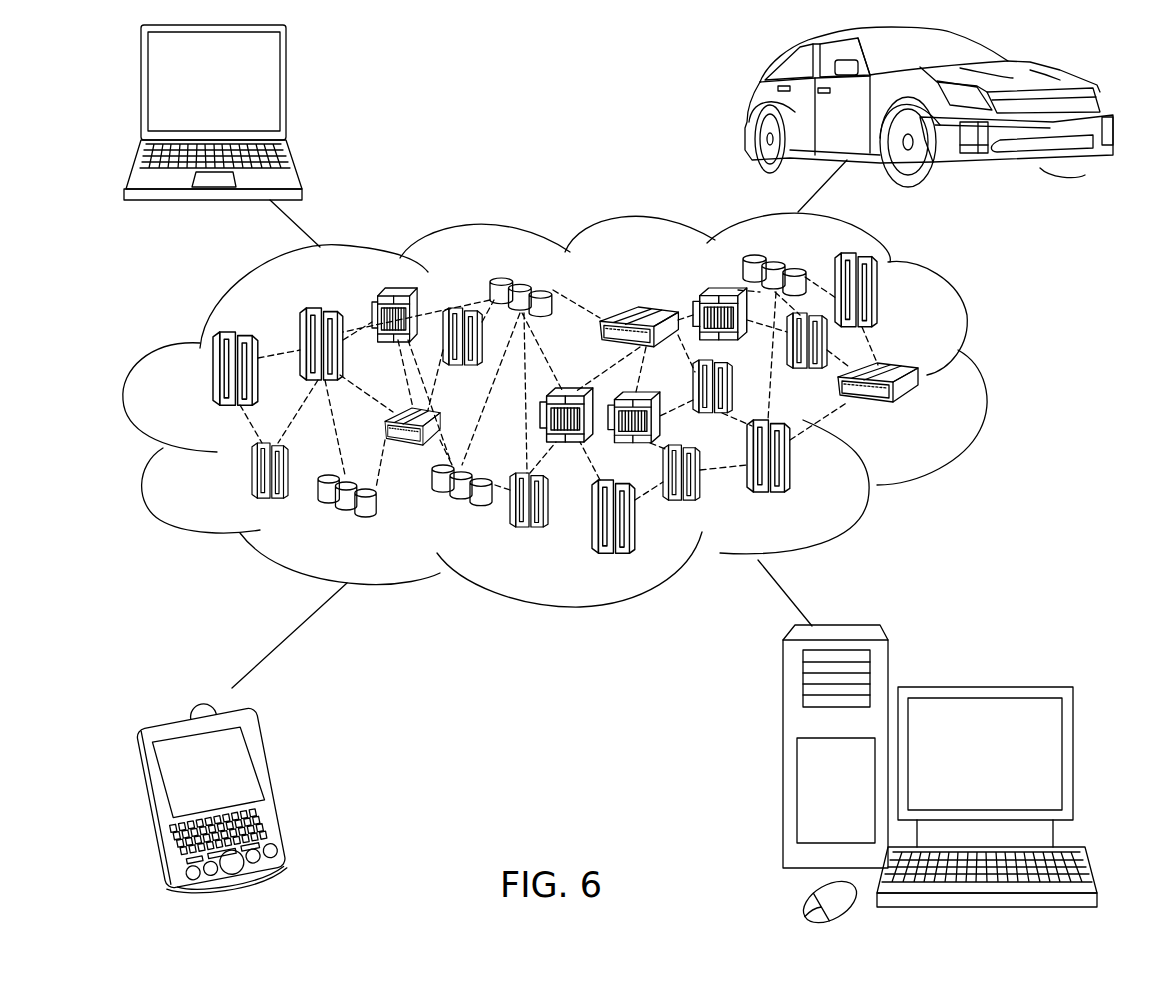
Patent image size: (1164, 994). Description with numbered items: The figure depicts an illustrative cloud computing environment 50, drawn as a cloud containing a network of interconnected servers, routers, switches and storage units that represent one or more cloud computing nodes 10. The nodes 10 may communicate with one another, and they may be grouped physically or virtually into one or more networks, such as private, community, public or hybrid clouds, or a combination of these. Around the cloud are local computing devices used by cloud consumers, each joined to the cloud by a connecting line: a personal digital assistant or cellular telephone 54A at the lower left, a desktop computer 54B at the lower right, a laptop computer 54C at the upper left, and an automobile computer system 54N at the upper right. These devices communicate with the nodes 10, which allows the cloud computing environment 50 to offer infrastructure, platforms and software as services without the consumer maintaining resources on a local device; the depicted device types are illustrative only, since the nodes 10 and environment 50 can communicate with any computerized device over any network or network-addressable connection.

The cloud computing node 10 is at (920, 411).
The cloud computing environment 50 is at (987, 380).
The personal digital assistant or cellular telephone 54A is at (275, 787).
The desktop computer 54B is at (983, 685).
The laptop computer 54C is at (286, 90).
The automobile computer system 54N is at (747, 108).